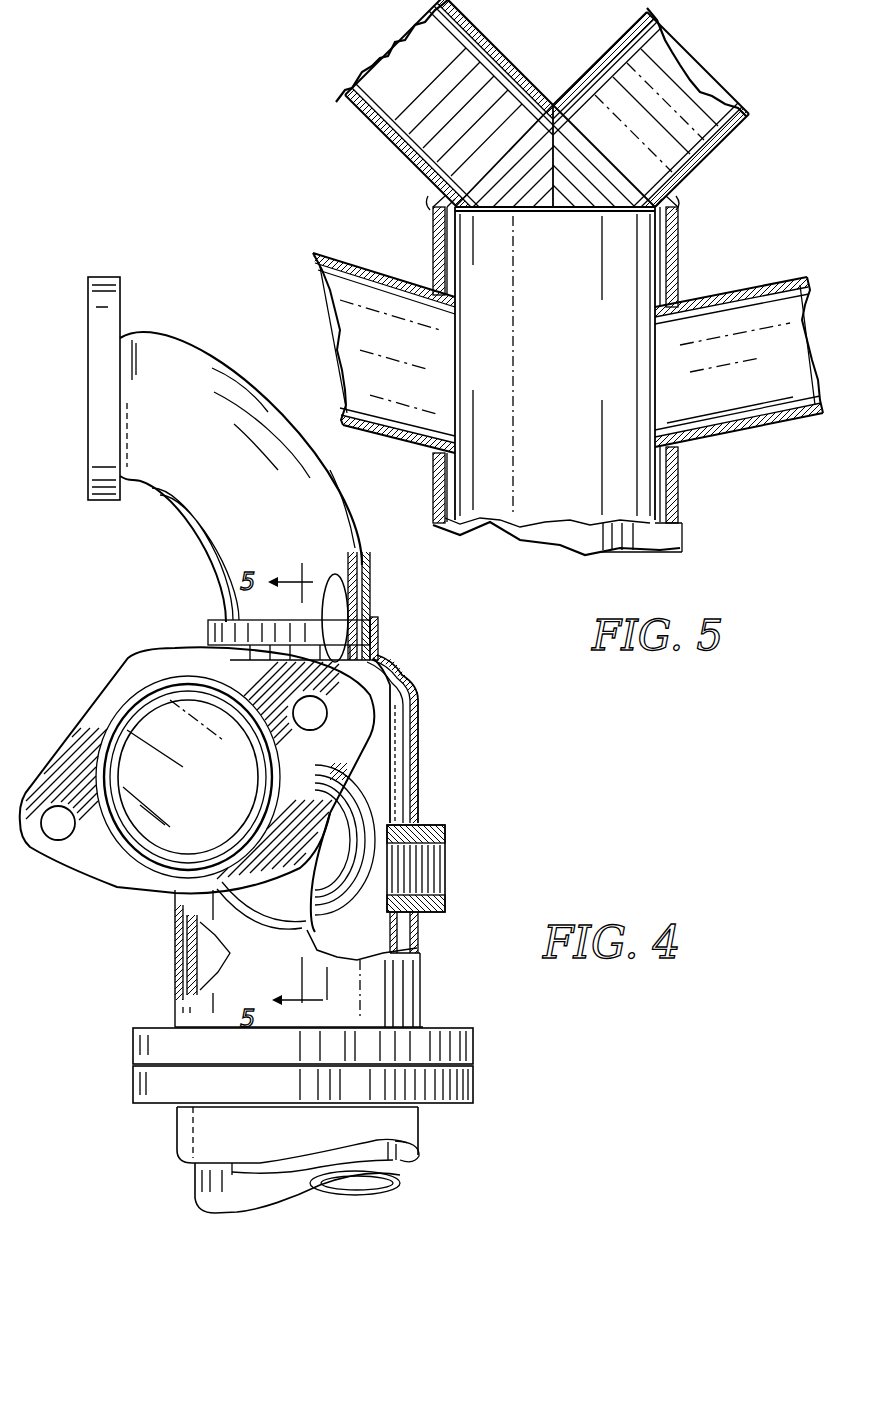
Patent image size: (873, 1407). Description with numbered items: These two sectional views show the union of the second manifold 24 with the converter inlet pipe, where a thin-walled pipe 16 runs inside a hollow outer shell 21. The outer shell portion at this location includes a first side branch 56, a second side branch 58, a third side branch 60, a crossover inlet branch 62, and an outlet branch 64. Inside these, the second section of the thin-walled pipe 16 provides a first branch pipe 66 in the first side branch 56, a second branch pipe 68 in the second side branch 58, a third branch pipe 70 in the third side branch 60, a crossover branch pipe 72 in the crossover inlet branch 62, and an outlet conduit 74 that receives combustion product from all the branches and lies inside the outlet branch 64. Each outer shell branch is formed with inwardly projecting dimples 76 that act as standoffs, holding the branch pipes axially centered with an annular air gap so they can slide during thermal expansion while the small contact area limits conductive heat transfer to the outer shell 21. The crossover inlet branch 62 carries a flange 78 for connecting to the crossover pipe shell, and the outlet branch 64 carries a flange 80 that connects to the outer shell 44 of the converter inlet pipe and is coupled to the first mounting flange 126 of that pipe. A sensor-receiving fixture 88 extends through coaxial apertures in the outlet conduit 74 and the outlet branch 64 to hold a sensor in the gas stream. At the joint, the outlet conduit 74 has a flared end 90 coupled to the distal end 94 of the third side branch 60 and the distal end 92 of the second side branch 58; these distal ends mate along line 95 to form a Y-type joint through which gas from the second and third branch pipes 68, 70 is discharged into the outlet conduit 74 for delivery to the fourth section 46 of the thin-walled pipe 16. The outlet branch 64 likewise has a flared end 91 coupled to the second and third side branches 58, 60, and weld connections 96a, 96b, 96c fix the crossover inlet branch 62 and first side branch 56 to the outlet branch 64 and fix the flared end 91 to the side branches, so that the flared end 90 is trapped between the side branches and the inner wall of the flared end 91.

In FIG. 5, the thin-walled pipe 16 is at (403, 55).
In FIG. 4, the thin-walled pipe 16 is at (335, 590).
In FIG. 5, the hollow outer shell 21 is at (690, 547).
In FIG. 4, the hollow outer shell 21 is at (193, 335).
In FIG. 5, the second manifold 24 is at (553, 68).
In FIG. 4, the second manifold 24 is at (462, 762).
In FIG. 4, the outer shell of the converter inlet pipe 44 is at (175, 1155).
In FIG. 4, the fourth section of thin-walled pipe 46 is at (230, 1185).
In FIG. 5, the first side branch 56 is at (780, 423).
In FIG. 4, the first side branch 56 is at (358, 897).
In FIG. 5, the second side branch 58 is at (733, 127).
In FIG. 5, the third side branch 60 is at (484, 40).
In FIG. 4, the third side branch 60 is at (195, 515).
In FIG. 4, the crossover inlet branch 62 is at (115, 889).
In FIG. 5, the outlet branch 64 is at (680, 507).
In FIG. 4, the outlet branch 64 is at (173, 987).
In FIG. 5, the first branch pipe 66 is at (810, 343).
In FIG. 4, the first branch pipe 66 is at (340, 848).
In FIG. 5, the second branch pipe 68 is at (707, 97).
In FIG. 5, the third branch pipe 70 is at (380, 80).
In FIG. 4, the third branch pipe 70 is at (362, 608).
In FIG. 5, the crossover branch pipe 72 is at (323, 300).
In FIG. 4, the crossover branch pipe 72 is at (247, 792).
In FIG. 5, the outlet conduit 74 is at (587, 525).
In FIG. 4, the outlet conduit 74 is at (400, 703).
In FIG. 5, the dimples 76 is at (427, 173).
In FIG. 4, the dimples 76 is at (358, 583).
In FIG. 4, the flange 78 is at (106, 270).
In FIG. 4, the flange 80 is at (480, 1045).
In FIG. 4, the sensor-receiving fixture 88 is at (455, 845).
In FIG. 5, the flared end 90 is at (480, 233).
In FIG. 4, the flared end 90 is at (330, 652).
In FIG. 5, the flared end 91 is at (423, 200).
In FIG. 4, the flared end 91 is at (235, 625).
In FIG. 5, the distal end 92 is at (687, 187).
In FIG. 5, the distal end 94 is at (443, 217).
In FIG. 5, the line 95 is at (552, 177).
In FIG. 5, the weld connection 96a is at (433, 277).
In FIG. 5, the weld connection 96b is at (677, 290).
In FIG. 5, the weld connection 96c is at (423, 187).
In FIG. 4, the first mounting flange 126 is at (480, 1090).